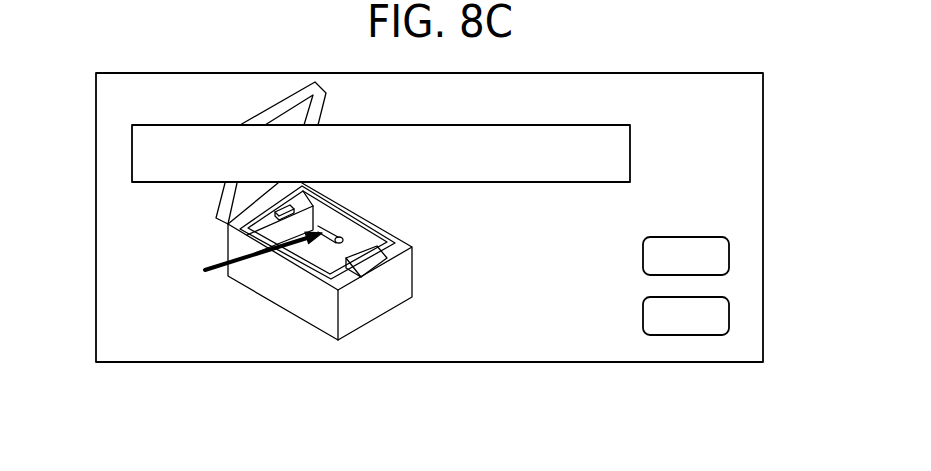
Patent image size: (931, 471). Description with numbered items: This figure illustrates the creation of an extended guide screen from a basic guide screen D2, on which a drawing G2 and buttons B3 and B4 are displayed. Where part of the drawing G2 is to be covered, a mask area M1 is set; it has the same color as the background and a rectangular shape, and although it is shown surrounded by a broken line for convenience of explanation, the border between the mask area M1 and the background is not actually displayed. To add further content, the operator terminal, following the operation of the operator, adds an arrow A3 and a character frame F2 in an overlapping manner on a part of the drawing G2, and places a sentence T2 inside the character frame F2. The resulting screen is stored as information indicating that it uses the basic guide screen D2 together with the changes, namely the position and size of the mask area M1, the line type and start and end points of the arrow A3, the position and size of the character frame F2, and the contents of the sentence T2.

The basic guide screen D2 is at (763, 128).
The character frame F2 is at (555, 125).
The sentence T2 is at (586, 147).
The drawing G2 is at (274, 244).
The mask area M1 is at (344, 244).
The arrow A3 is at (216, 274).
The button B3 is at (729, 257).
The button B4 is at (729, 316).